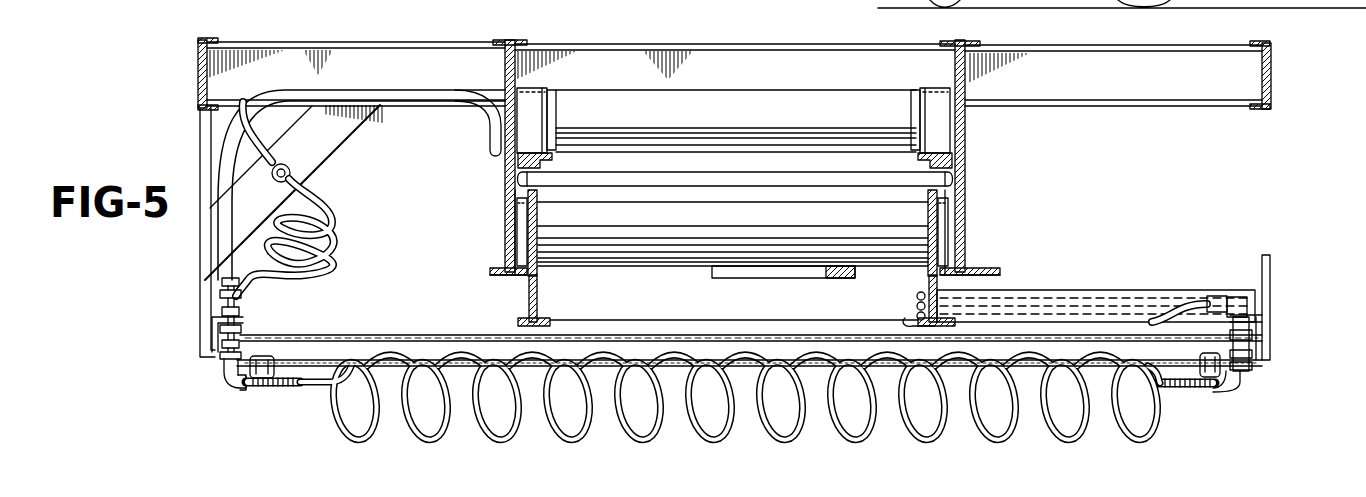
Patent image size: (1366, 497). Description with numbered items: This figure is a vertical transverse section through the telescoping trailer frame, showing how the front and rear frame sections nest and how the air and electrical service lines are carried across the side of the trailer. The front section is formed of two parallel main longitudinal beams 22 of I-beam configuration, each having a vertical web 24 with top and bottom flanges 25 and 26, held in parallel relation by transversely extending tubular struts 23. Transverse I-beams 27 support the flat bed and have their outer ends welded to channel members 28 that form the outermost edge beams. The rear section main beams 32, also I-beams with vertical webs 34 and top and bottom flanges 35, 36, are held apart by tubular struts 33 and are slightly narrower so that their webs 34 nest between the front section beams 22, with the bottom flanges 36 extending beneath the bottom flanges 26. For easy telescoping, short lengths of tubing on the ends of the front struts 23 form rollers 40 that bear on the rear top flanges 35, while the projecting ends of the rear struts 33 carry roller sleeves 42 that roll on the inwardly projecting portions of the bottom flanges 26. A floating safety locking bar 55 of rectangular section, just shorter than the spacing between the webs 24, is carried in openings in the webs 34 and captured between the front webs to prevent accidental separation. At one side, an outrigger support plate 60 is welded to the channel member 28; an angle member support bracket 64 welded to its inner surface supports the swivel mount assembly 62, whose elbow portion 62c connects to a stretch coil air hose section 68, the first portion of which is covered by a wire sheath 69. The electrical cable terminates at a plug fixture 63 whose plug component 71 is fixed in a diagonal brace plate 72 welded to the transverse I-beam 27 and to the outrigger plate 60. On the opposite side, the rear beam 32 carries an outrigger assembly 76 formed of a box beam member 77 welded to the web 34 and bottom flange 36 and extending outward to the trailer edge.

The main longitudinal beam 22 is at (503, 192).
The tubular strut 23 is at (820, 92).
The vertical web 24 is at (527, 242).
The top flange 25 is at (510, 42).
The bottom flange 26 is at (500, 276).
The transverse I-beam 27 is at (364, 58).
The channel member 28 is at (198, 58).
The rear section main beam 32 is at (518, 310).
The tubular strut 33 is at (694, 230).
The vertical web 34 is at (545, 224).
The top flange 35 is at (552, 162).
The bottom flange 36 is at (540, 318).
The roller 40 is at (545, 95).
The roller sleeve 42 is at (520, 221).
The floating safety locking bar 55 is at (958, 176).
The outrigger support plate 60 is at (200, 315).
The swivel mount assembly 62 is at (215, 367).
The elbow portion 62c is at (230, 380).
The electrical plug fixture 63 is at (300, 175).
The angle member support bracket 64 is at (245, 310).
The stretch coil air hose section 68 is at (430, 432).
The wire sheath 69 is at (292, 386).
The plug component 71 is at (287, 166).
The diagonal brace plate 72 is at (383, 124).
The outrigger assembly 76 is at (1288, 250).
The box beam member 77 is at (1082, 294).